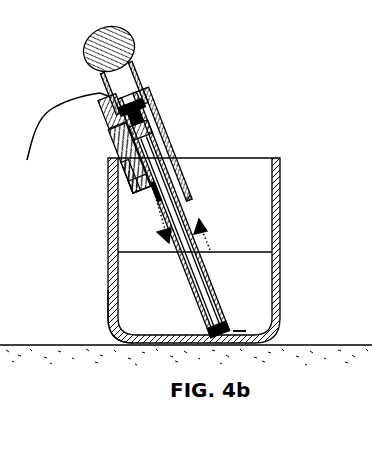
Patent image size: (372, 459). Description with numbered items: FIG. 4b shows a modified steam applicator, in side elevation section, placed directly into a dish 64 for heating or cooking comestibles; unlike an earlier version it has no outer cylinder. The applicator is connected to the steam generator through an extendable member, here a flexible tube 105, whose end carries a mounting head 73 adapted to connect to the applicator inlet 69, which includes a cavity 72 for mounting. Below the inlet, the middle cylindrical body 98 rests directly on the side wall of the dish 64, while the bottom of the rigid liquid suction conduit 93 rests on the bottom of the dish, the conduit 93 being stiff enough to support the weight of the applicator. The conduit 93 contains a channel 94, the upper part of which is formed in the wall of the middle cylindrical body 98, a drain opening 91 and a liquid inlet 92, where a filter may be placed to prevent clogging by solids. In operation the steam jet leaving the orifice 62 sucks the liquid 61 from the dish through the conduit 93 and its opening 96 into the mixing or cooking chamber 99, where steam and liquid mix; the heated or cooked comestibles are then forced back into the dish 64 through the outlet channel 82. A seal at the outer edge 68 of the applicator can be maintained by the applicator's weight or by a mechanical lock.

The liquid 61 is at (165, 283).
The orifice 62 is at (120, 128).
The dish 64 is at (106, 303).
The outer edge 68 is at (278, 158).
The applicator inlet 69 is at (101, 104).
The cavity 72 is at (143, 97).
The mounting head 73 is at (138, 80).
The outlet channel 82 is at (132, 197).
The drain opening 91 is at (268, 330).
The liquid inlet 92 is at (223, 318).
The liquid suction conduit 93 is at (173, 188).
The channel 94 is at (182, 213).
The opening 96 is at (122, 131).
The middle cylindrical body 98 is at (128, 185).
The mixing chamber 99 is at (110, 150).
The flexible tube 105 is at (53, 106).